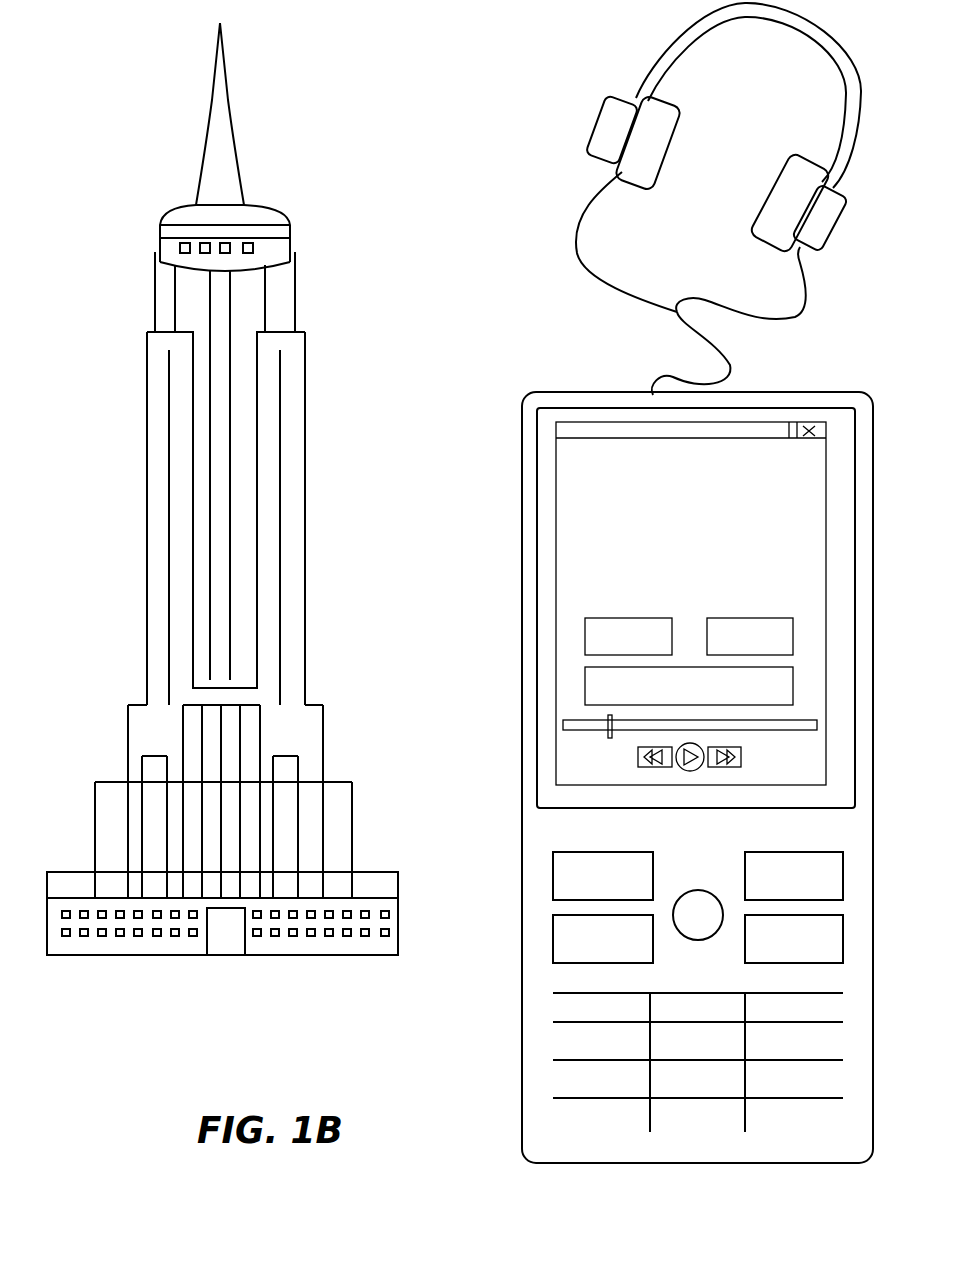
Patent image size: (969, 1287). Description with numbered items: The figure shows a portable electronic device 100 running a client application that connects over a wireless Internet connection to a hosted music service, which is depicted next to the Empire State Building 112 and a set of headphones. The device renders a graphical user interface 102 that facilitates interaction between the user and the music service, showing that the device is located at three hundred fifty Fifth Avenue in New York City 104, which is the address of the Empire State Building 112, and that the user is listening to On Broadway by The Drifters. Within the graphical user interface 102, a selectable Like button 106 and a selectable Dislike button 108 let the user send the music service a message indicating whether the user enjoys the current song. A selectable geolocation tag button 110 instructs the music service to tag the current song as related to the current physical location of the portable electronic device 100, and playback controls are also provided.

The portable electronic device 100 is at (522, 853).
The graphical user interface 102 is at (556, 493).
The New York City 104 is at (419, 146).
The Like button 106 is at (585, 640).
The Dislike button 108 is at (793, 640).
The geolocation tag button 110 is at (585, 688).
The Empire State Building 112 is at (305, 348).